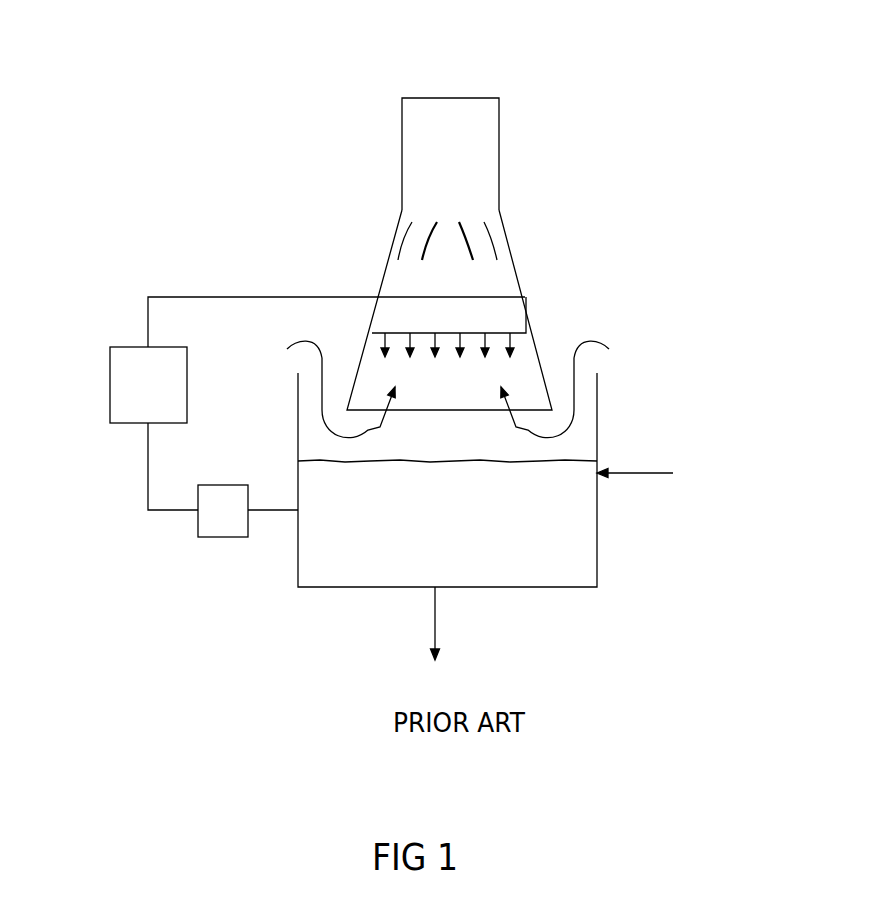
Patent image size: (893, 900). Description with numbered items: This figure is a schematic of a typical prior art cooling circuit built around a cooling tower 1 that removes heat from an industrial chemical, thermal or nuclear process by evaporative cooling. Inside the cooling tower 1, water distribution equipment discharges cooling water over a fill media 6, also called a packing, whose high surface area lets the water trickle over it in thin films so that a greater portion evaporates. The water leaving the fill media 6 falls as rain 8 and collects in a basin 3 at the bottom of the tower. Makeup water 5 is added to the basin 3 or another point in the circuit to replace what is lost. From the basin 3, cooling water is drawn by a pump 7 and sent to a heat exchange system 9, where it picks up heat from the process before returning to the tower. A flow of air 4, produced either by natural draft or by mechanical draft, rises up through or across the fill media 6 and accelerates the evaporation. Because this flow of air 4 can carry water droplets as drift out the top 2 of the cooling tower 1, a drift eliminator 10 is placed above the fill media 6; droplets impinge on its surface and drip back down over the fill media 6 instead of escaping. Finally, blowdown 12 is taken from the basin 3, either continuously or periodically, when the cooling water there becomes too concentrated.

The cooling tower 1 is at (586, 142).
The top 2 is at (397, 75).
The basin 3 is at (460, 548).
The flow of air 4 is at (445, 388).
The makeup water 5 is at (635, 470).
The fill media 6 is at (472, 323).
The pump 7 is at (222, 500).
The rain 8 is at (461, 398).
The heat exchange system 9 is at (135, 397).
The drift eliminator 10 is at (534, 232).
The blowdown 12 is at (435, 610).